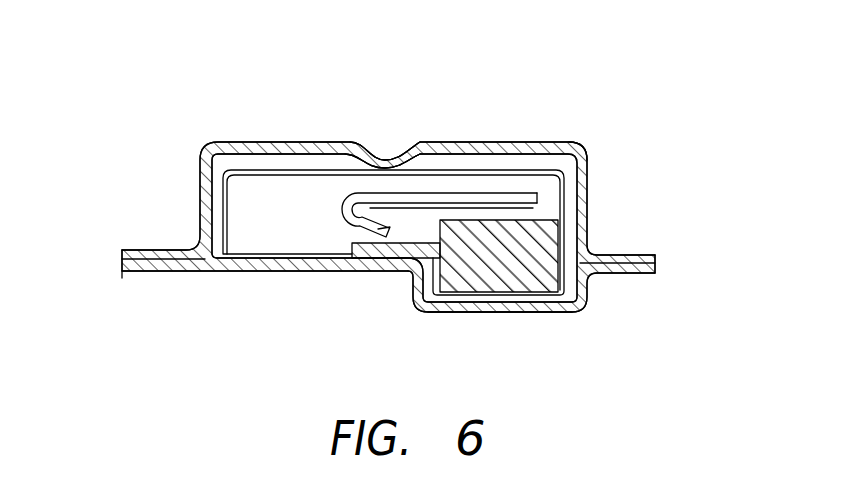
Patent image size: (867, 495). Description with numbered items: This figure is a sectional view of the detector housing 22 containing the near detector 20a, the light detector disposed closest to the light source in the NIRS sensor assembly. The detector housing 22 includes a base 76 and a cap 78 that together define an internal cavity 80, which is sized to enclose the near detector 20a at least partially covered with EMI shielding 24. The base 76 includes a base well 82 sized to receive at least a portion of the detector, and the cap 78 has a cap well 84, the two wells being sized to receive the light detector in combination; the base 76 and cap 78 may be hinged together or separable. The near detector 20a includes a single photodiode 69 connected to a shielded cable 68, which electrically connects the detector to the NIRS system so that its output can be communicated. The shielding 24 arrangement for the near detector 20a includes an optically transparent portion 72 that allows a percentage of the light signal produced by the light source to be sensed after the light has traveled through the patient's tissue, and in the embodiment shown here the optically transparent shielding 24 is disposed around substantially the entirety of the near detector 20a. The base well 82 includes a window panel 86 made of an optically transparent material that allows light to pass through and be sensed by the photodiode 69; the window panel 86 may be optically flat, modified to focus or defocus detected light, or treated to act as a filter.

The near detector 20a is at (455, 122).
The detector housing 22 is at (203, 155).
The EMI shielding 24 is at (270, 168).
The internal cavity 80 is at (338, 163).
The shielded cable 68 is at (497, 192).
The cap well 84 is at (579, 156).
The optically transparent portion 72 is at (566, 190).
The cap 78 is at (157, 252).
The base 76 is at (157, 270).
The base well 82 is at (416, 304).
The photodiode 69 is at (523, 268).
The window panel 86 is at (525, 311).